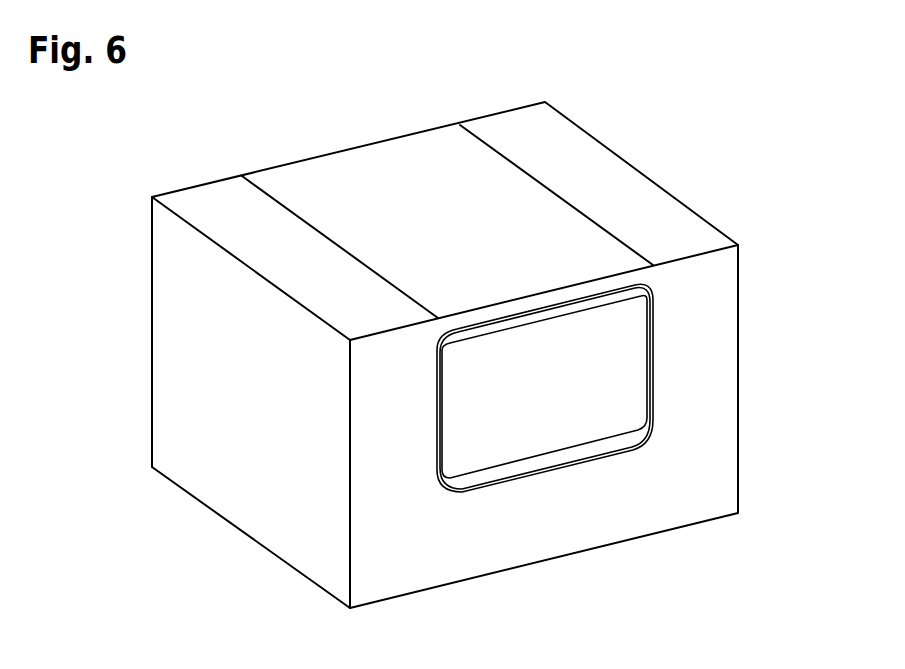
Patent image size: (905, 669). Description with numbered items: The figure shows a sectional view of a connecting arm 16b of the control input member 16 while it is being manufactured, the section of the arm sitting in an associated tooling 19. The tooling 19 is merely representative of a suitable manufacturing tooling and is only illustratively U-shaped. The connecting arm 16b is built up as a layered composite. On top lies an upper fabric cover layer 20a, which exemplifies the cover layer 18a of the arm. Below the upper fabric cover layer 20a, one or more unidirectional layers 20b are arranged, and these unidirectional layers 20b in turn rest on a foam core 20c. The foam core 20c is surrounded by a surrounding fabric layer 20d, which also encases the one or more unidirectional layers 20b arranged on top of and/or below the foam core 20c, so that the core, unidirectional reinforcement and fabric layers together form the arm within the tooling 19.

The control input member 16 is at (210, 148).
The connecting arm 16b is at (330, 152).
The cover layer 18a is at (387, 173).
The tooling 19 is at (683, 205).
The upper fabric cover layer 20a is at (508, 190).
The unidirectional layers 20b is at (475, 332).
The foam core 20c is at (603, 373).
The surrounding fabric layer 20d is at (447, 442).